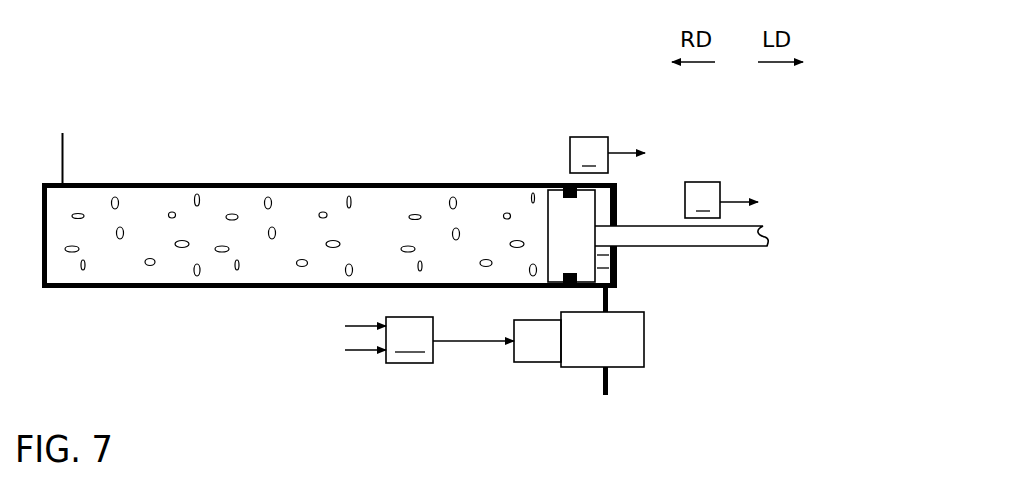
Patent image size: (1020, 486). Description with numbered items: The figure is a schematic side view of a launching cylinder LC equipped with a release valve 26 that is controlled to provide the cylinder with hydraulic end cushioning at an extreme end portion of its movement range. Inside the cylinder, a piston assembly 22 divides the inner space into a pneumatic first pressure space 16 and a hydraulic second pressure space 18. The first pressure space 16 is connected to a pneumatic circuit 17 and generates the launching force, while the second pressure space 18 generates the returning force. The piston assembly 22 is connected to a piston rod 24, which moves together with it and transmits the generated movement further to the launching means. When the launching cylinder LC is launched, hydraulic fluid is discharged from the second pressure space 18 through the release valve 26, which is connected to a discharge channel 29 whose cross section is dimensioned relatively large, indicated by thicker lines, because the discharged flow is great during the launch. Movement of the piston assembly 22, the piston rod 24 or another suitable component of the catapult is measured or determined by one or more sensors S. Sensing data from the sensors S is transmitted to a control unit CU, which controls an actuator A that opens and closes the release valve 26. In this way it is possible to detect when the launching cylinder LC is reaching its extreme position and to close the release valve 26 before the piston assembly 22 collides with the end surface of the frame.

The pneumatic first pressure space 16 is at (187, 260).
The pneumatic circuit 17 is at (63, 158).
The hydraulic second pressure space 18 is at (618, 205).
The piston assembly 22 is at (556, 213).
The piston rod 24 is at (733, 238).
The release valve 26 is at (575, 378).
The discharge channel 29 is at (608, 303).
The actuator A is at (530, 349).
The control unit CU is at (429, 340).
The sensor S is at (664, 177).
The launching cylinder LC is at (528, 81).